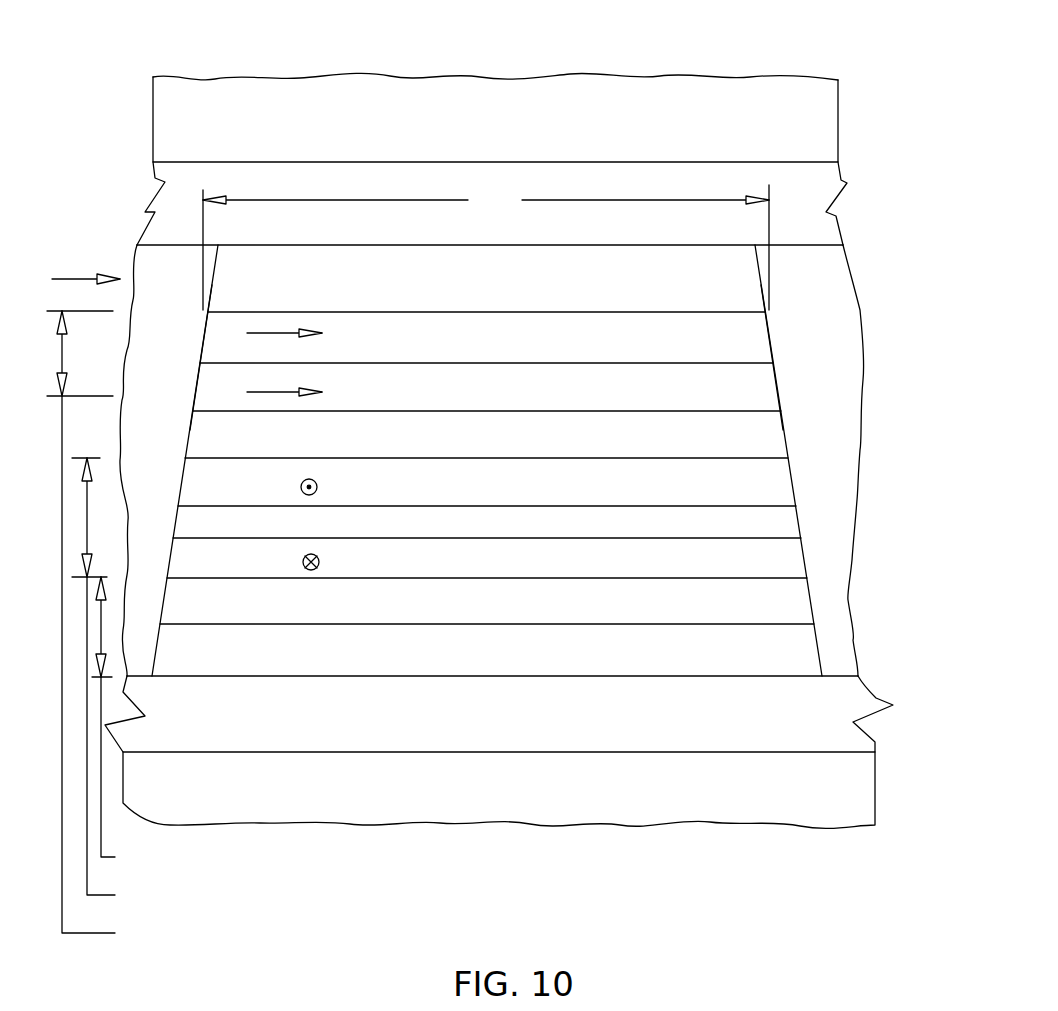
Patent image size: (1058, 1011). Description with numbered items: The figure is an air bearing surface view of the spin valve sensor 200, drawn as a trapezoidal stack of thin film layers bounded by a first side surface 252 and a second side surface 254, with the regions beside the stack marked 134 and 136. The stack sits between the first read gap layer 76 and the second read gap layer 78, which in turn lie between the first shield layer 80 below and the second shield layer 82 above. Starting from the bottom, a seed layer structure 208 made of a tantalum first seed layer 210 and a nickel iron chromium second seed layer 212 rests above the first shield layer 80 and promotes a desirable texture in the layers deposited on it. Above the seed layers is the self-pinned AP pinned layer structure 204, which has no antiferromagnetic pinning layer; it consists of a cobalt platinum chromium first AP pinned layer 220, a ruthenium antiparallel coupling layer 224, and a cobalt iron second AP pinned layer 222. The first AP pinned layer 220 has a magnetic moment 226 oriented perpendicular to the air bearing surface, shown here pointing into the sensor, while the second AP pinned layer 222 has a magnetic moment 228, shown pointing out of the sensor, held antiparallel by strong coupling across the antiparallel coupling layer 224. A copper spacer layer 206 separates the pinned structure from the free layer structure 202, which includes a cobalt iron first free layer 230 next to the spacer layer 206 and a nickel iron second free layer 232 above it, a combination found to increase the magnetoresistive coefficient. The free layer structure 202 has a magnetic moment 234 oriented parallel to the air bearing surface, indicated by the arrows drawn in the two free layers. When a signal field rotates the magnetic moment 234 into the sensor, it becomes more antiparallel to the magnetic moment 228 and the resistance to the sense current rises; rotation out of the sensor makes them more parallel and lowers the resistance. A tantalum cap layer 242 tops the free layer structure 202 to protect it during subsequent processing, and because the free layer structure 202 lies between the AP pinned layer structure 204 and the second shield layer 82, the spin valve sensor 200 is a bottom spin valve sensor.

The spin valve sensor 200 is at (918, 676).
The second shield layer 82 is at (492, 159).
The second read gap layer 78 is at (490, 231).
The cap layer 242 is at (486, 293).
The second free layer 232 is at (486, 346).
The first free layer 230 is at (487, 394).
The spacer layer 206 is at (486, 440).
The second AP pinned layer 222 is at (487, 488).
The antiparallel coupling layer 224 is at (487, 524).
The first AP pinned layer 220 is at (487, 563).
The second seed layer 212 is at (487, 608).
The first seed layer 210 is at (492, 657).
The first read gap layer 76 is at (499, 714).
The first shield layer 80 is at (499, 790).
The first hard bias / lead region 134 is at (149, 460).
The second hard bias / lead region 136 is at (831, 460).
The first side surface 252 is at (187, 447).
The second side surface 254 is at (769, 333).
The magnetic moment of the free layer structure 234 is at (278, 394).
The magnetic moment of the second AP pinned layer 228 is at (300, 487).
The magnetic moment of the first AP pinned layer 226 is at (303, 562).
The free layer structure 202 is at (248, 628).
The AP pinned layer structure 204 is at (294, 682).
The seed layer structure 208 is at (272, 723).